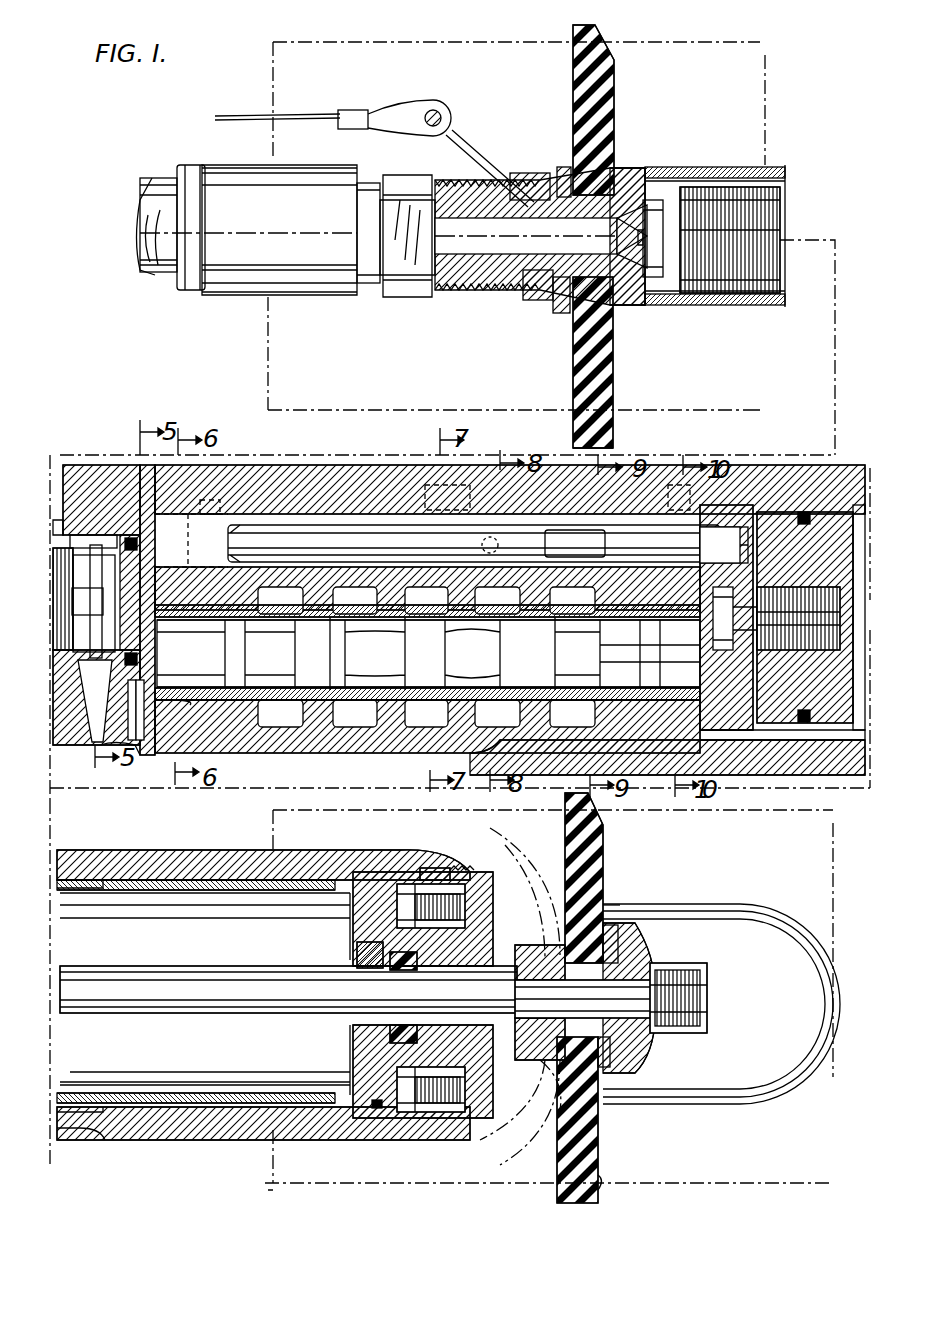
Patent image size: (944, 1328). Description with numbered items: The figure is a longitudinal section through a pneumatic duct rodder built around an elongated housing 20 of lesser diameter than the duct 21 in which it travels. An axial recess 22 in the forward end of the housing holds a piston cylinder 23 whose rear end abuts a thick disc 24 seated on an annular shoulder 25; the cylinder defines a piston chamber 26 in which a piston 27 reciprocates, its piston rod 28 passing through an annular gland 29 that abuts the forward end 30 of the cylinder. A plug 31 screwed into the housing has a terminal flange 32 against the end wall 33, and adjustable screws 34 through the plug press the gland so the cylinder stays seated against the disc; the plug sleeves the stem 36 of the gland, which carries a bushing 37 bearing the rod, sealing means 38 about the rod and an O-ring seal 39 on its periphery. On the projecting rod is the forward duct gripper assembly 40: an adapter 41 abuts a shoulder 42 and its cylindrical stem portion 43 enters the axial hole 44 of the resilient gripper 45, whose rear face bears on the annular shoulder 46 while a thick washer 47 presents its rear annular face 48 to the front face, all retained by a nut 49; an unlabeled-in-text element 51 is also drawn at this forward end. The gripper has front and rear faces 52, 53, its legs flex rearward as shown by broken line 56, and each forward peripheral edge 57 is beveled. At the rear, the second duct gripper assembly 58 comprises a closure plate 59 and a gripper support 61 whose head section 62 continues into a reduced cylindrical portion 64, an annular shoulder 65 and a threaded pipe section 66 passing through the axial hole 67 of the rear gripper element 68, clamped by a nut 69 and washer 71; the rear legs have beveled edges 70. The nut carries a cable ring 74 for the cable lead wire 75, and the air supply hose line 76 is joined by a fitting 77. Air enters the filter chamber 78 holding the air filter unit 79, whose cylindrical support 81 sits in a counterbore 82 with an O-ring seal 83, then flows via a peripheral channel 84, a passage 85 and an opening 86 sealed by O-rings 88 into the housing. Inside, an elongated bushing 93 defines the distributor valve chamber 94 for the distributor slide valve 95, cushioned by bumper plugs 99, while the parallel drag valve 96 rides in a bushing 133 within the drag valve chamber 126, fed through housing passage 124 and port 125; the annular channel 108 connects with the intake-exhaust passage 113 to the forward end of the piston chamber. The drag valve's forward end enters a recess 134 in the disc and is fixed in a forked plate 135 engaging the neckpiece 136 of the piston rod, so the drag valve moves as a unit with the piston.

The elongated housing 20 is at (285, 462).
The duct 21 is at (762, 50).
The axial recess 22 is at (166, 878).
The piston cylinder 23 is at (216, 888).
The thick disc 24 is at (760, 697).
The annular shoulder 25 is at (703, 722).
The piston chamber 26 is at (195, 1090).
The piston 27 is at (752, 678).
The piston rod 28 is at (208, 966).
The annular gland 29 is at (353, 1072).
The forward end of the cylinder 30 is at (352, 903).
The plug 31 is at (486, 884).
The terminal flange 32 is at (465, 858).
The end wall 33 is at (472, 875).
The adjustable screws 34 is at (480, 932).
The stem of the gland 36 is at (485, 1058).
The bushing 37 is at (420, 978).
The sealing means 38 is at (405, 978).
The O-ring seal 39 is at (376, 1110).
The duct gripper assembly 40 is at (620, 897).
The adapter 41 is at (520, 952).
The shoulder 42 is at (490, 1028).
The cylindrical stem portion 43 is at (565, 975).
The axial hole 44 is at (565, 1038).
The gripper 45 is at (604, 855).
The annular shoulder 46 is at (558, 945).
The thick washer 47 is at (652, 968).
The rear annular face 48 is at (560, 1075).
The nut 49 is at (698, 1034).
The U-shaped bracket 51 is at (722, 1104).
The front face 52 is at (598, 1137).
The rear face 53 is at (556, 1163).
The broken line 56 is at (500, 1150).
The forward peripheral edge 57 is at (616, 1168).
The duct gripper assembly 58 is at (613, 86).
The closure plate 59 is at (138, 458).
The gripper support 61 is at (726, 162).
The head section 62 is at (92, 465).
The reduced cylindrical portion 64 is at (620, 178).
The annular shoulder 65 is at (612, 302).
The externally threaded pipe section 66 is at (535, 300).
The axial hole 67 is at (541, 236).
The gripper element 68 is at (614, 392).
The nut 69 is at (522, 178).
The beveled peripheral inner edges 70 is at (605, 440).
The washer 71 is at (556, 312).
The cable ring 74 is at (458, 133).
The cable lead wire 75 is at (294, 119).
The air supply hose line 76 is at (165, 278).
The fitting 77 is at (410, 300).
The filter chamber 78 is at (658, 187).
The air filter unit 79 is at (732, 297).
The cylindrical support 81 is at (130, 572).
The counterbore 82 is at (102, 545).
The O-ring seal 83 is at (140, 540).
The peripheral channel 84 is at (92, 545).
The passage 85 is at (55, 745).
The opening 86 is at (150, 712).
The O-rings 88 is at (150, 755).
The elongated bushing 93 is at (205, 607).
The air distributor valve chamber 94 is at (208, 700).
The distributor slide valve 95 is at (476, 667).
The drag valve 96 is at (396, 556).
The bumper plugs 99 is at (254, 657).
The annular channel 108 is at (470, 740).
The intake-exhaust passage 113 is at (640, 748).
The housing passage 124 is at (445, 489).
The port 125 is at (554, 546).
The drag valve chamber 126 is at (198, 530).
The bushing 133 is at (469, 547).
The recess 134 is at (716, 548).
The forked plate 135 is at (760, 580).
The neckpiece 136 is at (750, 620).